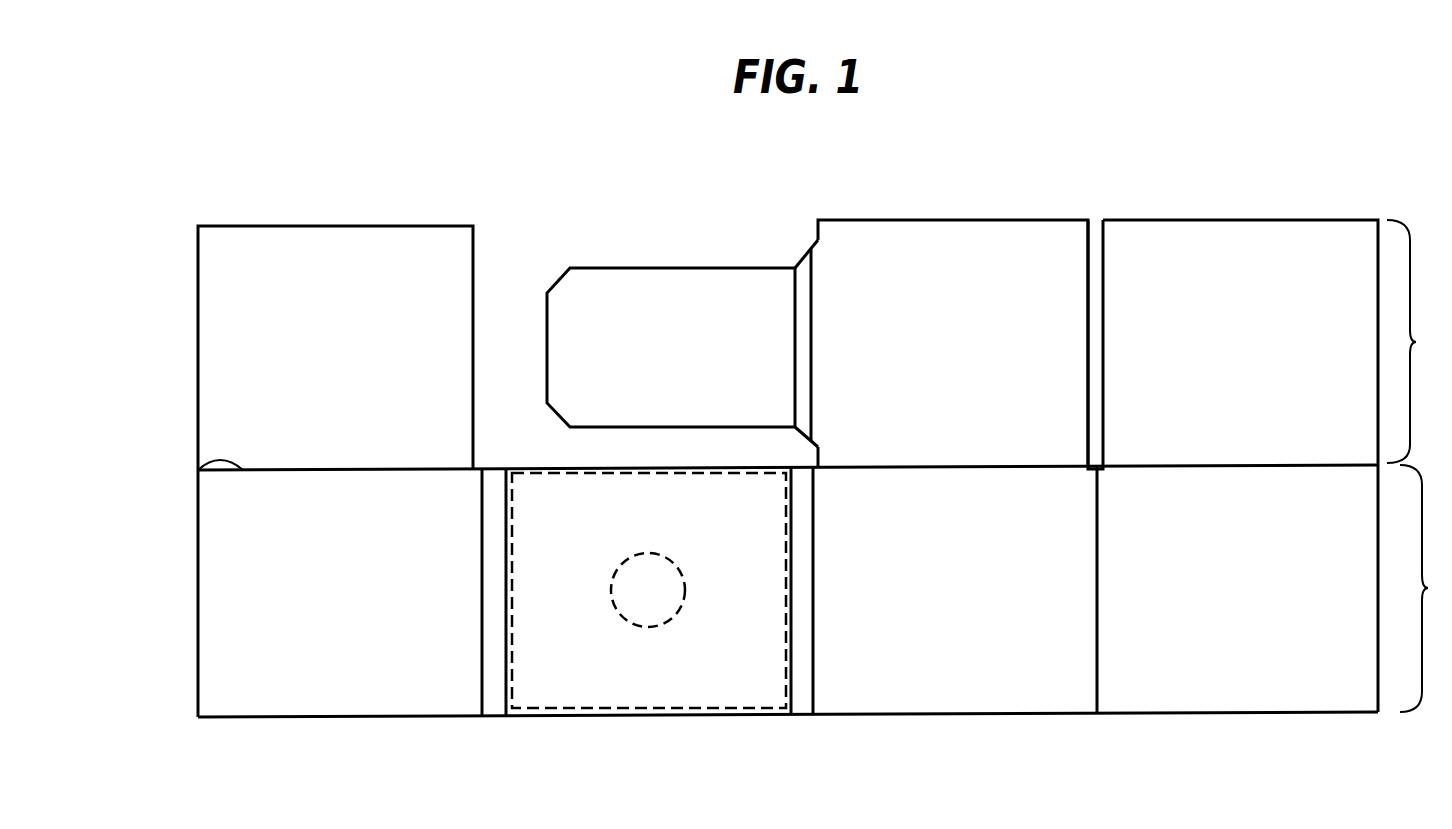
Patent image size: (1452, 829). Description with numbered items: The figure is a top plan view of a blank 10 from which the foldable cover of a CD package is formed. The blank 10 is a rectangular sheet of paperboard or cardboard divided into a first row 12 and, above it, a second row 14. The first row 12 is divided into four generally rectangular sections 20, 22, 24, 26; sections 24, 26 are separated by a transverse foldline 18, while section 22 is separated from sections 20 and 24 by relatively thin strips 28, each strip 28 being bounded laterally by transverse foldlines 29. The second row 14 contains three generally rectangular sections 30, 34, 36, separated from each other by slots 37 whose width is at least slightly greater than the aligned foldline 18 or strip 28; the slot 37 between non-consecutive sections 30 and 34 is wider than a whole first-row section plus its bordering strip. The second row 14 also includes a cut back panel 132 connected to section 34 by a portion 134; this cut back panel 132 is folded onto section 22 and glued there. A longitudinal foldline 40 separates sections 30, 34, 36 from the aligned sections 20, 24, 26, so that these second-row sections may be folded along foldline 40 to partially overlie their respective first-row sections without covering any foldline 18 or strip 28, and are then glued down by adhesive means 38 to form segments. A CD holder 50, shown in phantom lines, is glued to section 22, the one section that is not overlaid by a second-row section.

The blank 10 is at (696, 136).
The first row 12 is at (1426, 588).
The second row 14 is at (1416, 341).
The transverse foldline 18 is at (1097, 680).
The section 20 is at (346, 626).
The section 22 is at (699, 679).
The section 24 is at (953, 606).
The section 26 is at (1273, 603).
The strip 28 is at (495, 692).
The transverse foldline 29 is at (482, 655).
The section 30 is at (348, 328).
The section 34 is at (963, 326).
The section 36 is at (1261, 323).
The slot 37 is at (473, 275).
The adhesive means 38 is at (353, 226).
The longitudinal foldline 40 is at (198, 472).
The CD holder 50 is at (622, 670).
The cut back panel 132 is at (647, 278).
The portion 134 is at (803, 268).